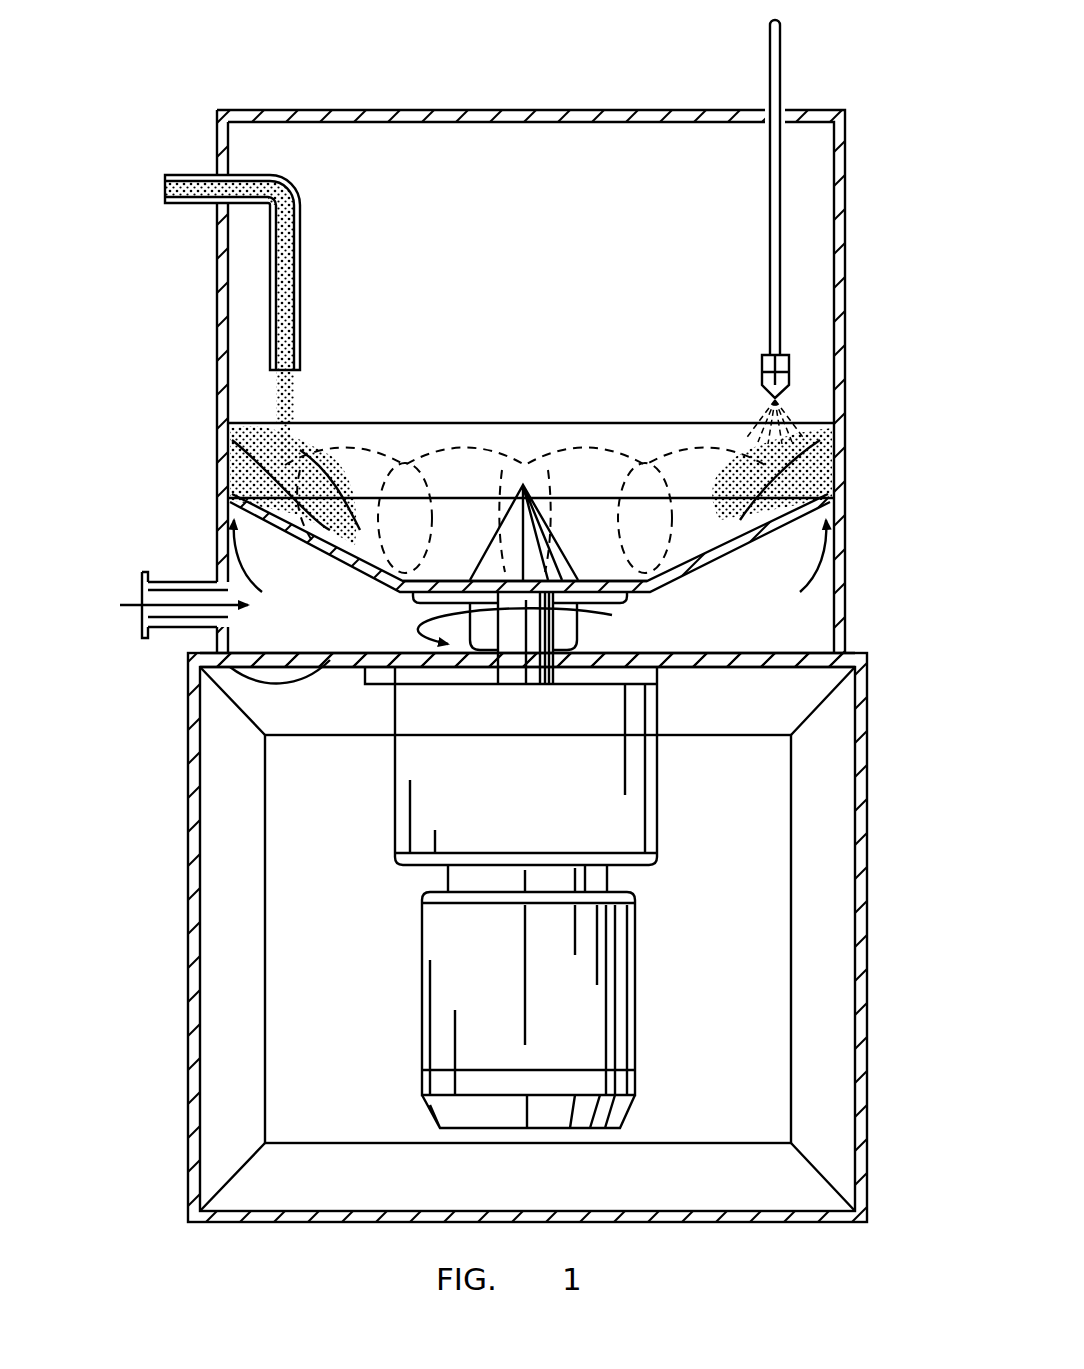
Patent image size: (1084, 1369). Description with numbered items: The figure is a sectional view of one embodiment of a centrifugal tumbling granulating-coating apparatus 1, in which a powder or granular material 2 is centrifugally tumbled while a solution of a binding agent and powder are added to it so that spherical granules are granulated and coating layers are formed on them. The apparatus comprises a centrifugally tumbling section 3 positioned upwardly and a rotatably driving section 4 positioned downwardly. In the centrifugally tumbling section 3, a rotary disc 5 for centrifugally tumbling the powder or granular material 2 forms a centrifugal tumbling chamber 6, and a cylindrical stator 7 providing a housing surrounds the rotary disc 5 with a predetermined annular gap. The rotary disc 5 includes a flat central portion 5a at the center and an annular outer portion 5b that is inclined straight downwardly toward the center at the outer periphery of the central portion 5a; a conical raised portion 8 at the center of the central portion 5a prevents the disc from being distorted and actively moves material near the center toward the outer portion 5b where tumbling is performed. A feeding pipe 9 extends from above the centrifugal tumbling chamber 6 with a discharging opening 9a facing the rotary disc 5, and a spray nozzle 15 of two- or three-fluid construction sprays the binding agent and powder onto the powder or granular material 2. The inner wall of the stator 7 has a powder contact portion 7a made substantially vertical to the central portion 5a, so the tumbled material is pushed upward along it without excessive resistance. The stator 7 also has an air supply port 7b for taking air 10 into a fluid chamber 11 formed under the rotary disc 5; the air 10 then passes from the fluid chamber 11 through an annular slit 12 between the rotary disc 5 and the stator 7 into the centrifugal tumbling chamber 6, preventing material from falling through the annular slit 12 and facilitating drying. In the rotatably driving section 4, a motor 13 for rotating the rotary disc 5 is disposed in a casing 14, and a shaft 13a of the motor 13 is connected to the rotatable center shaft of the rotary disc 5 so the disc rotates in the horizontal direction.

The centrifugal tumbling granulating-coating apparatus 1 is at (822, 90).
The powder or granular material 2 is at (300, 250).
The centrifugally tumbling section 3 is at (845, 258).
The rotatably driving section 4 is at (876, 828).
The rotary disc 5 is at (457, 340).
The central portion 5a is at (445, 583).
The annular outer portion 5b is at (358, 583).
The centrifugal tumbling chamber 6 is at (586, 452).
The cylindrical stator 7 is at (845, 428).
The powder contact portion 7a is at (228, 430).
The air supply port 7b is at (150, 612).
The conical raised portion 8 is at (495, 578).
The feeding pipe 9 is at (300, 222).
The discharging opening 9a is at (300, 378).
The air 10 is at (142, 600).
The fluid chamber 11 is at (285, 648).
The annular slit 12 is at (228, 505).
The motor 13 is at (636, 992).
The shaft 13a is at (625, 632).
The casing 14 is at (188, 966).
The spray nozzle 15 is at (789, 372).